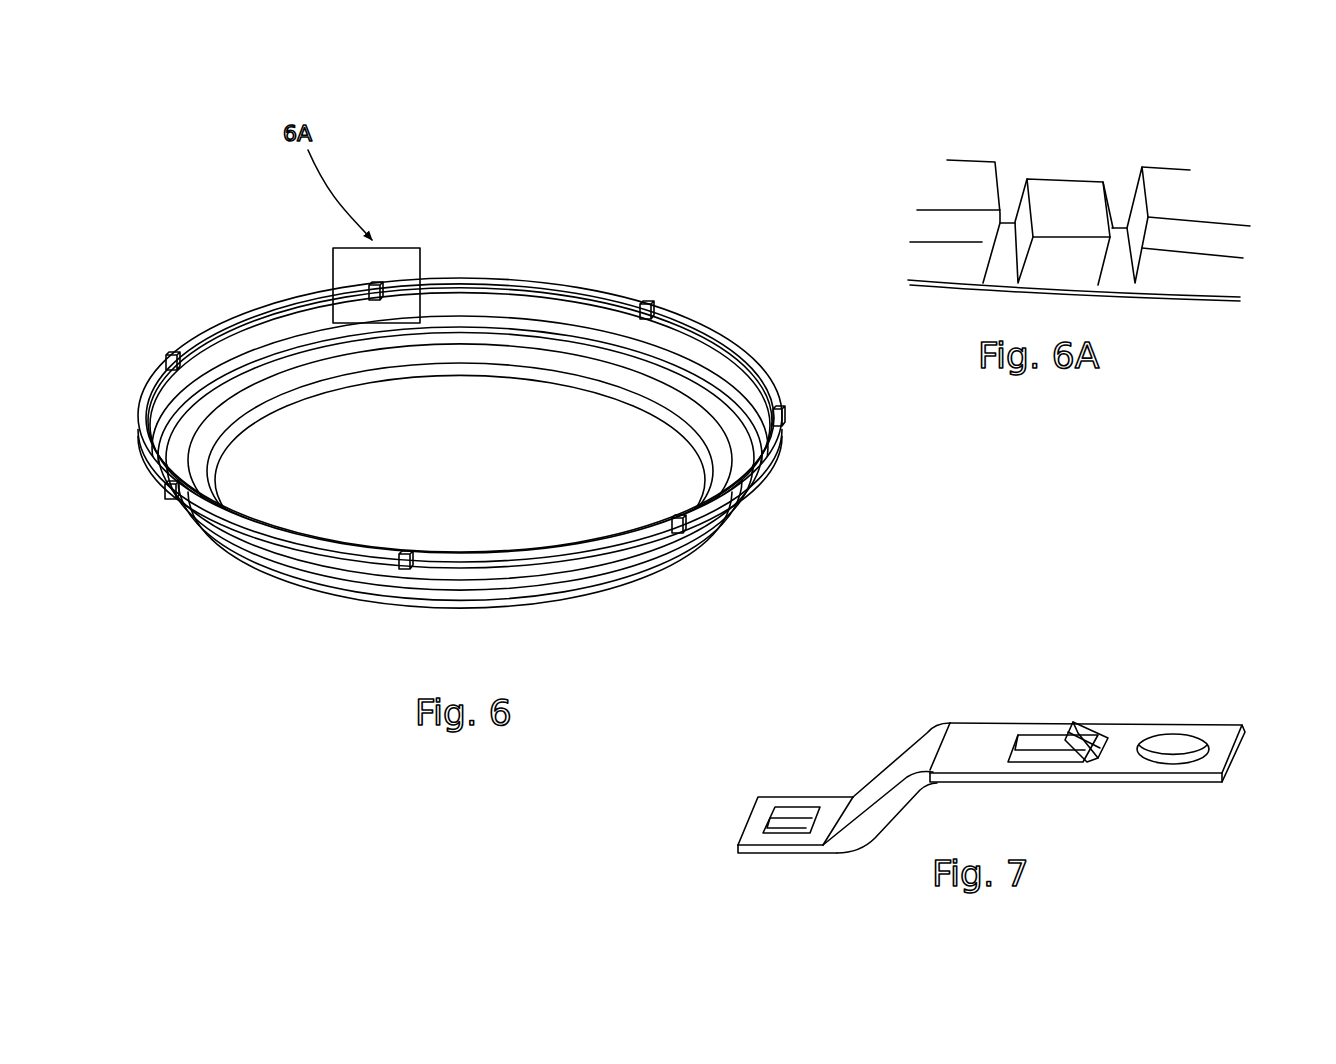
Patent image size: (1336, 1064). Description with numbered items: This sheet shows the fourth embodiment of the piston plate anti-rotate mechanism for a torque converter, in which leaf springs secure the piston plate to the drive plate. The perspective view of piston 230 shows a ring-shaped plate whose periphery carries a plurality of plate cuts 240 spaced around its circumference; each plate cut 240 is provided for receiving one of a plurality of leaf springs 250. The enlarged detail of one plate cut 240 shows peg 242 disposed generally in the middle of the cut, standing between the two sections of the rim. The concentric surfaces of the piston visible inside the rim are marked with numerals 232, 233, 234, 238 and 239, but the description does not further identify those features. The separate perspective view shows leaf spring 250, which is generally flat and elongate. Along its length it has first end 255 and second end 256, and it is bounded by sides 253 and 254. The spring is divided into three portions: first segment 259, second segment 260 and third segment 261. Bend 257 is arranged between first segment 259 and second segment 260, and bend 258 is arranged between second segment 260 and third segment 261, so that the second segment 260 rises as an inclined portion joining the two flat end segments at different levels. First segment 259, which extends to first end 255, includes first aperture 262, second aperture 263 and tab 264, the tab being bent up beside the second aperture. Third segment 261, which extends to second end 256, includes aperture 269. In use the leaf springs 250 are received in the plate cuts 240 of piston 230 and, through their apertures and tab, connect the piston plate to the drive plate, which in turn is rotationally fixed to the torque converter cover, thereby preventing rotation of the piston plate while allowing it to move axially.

In FIG. 6, the piston 230 is at (498, 358).
In FIG. 6, the inner ring 232 is at (572, 394).
In FIG. 6, the inner edge 233 is at (317, 410).
In FIG. 6, the intermediate ring 234 is at (702, 427).
In FIG. 6, the inner surface 238 is at (695, 352).
In FIG. 6, the outer rim 239 is at (725, 343).
In FIG. 6, the plate cut 240 is at (168, 362).
In FIG. 6A, the plate cut 240 is at (1119, 203).
In FIG. 6A, the peg 242 is at (1053, 188).
In FIG. 7, the leaf spring 250 is at (1002, 706).
In FIG. 7, the side 253 is at (1142, 777).
In FIG. 7, the side 254 is at (995, 745).
In FIG. 7, the first end 255 is at (1245, 748).
In FIG. 7, the second end 256 is at (747, 827).
In FIG. 7, the bend 257 is at (930, 740).
In FIG. 7, the bend 258 is at (857, 800).
In FIG. 7, the first segment 259 is at (970, 725).
In FIG. 7, the second segment 260 is at (887, 778).
In FIG. 7, the third segment 261 is at (830, 800).
In FIG. 7, the first aperture 262 is at (1187, 750).
In FIG. 7, the second aperture 263 is at (1032, 752).
In FIG. 7, the tab 264 is at (1077, 720).
In FIG. 7, the aperture 269 is at (800, 823).